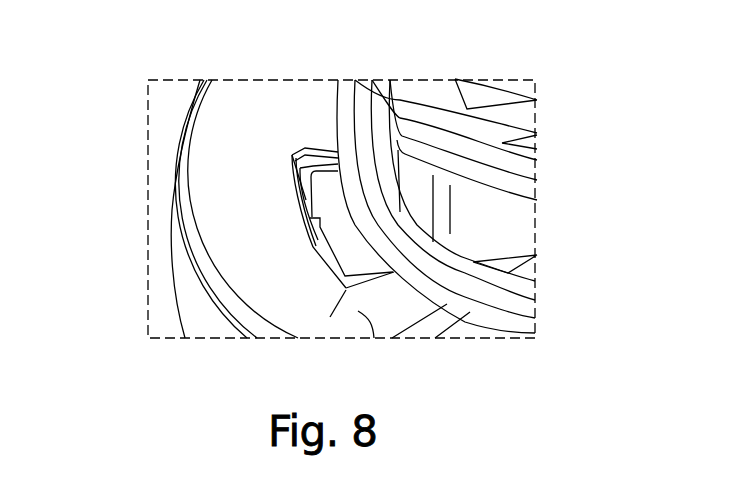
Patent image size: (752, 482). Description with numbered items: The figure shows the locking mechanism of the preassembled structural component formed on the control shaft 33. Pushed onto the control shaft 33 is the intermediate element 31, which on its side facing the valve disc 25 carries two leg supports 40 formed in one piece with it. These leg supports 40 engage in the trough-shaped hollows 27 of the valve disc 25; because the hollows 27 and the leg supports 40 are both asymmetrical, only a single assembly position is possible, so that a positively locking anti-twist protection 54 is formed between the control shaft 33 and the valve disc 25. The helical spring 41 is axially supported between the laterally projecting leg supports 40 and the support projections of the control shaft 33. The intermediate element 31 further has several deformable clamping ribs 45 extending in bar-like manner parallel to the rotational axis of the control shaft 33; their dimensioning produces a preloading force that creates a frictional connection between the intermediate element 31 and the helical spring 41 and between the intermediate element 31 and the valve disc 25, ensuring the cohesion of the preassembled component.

The valve disc 25 is at (358, 312).
The trough-shaped hollows 27 is at (352, 285).
The intermediate element 31 is at (512, 222).
The control shaft 33 is at (487, 100).
The leg supports 40 is at (344, 239).
The helical spring 41 is at (518, 170).
The clamping ribs 45 is at (384, 171).
The anti-twist protection 54 is at (272, 206).